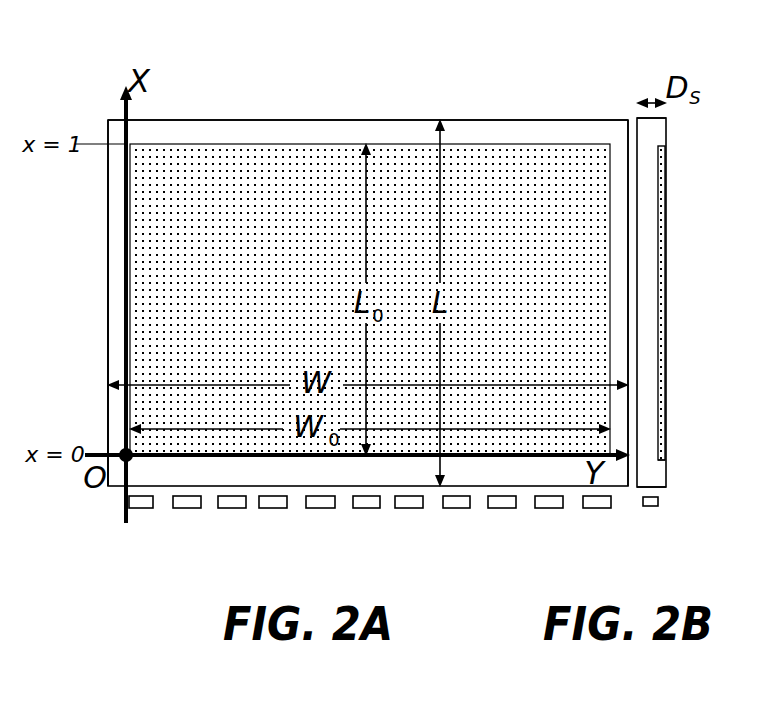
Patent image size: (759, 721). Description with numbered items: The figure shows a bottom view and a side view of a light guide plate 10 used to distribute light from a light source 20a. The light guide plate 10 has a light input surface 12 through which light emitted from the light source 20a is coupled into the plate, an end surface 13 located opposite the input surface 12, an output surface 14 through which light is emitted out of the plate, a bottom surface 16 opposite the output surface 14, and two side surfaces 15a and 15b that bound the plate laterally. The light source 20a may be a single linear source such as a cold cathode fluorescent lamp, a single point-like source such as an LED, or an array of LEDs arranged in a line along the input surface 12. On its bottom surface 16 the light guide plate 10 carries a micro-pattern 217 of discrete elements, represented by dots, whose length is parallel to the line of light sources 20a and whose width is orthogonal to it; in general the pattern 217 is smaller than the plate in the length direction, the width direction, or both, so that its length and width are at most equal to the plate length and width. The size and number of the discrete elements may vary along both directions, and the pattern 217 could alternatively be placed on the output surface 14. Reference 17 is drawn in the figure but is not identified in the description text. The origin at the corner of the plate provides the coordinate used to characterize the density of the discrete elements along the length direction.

In FIG. 2A, the light guide plate 10 is at (250, 25).
In FIG. 2B, the light input surface 12 is at (660, 495).
In FIG. 2B, the end surface 13 is at (654, 118).
In FIG. 2B, the output surface 14 is at (635, 160).
In FIG. 2A, the side surface 15a is at (108, 240).
In FIG. 2A, the side surface 15b is at (625, 165).
In FIG. 2B, the bottom surface 16 is at (667, 425).
In FIG. 2A, the light incident surface 17 is at (118, 130).
In FIG. 2A, the light source 20a is at (407, 511).
In FIG. 2B, the light source 20a is at (650, 510).
In FIG. 2A, the micro-pattern 217 is at (300, 165).
In FIG. 2B, the micro-pattern 217 is at (663, 195).